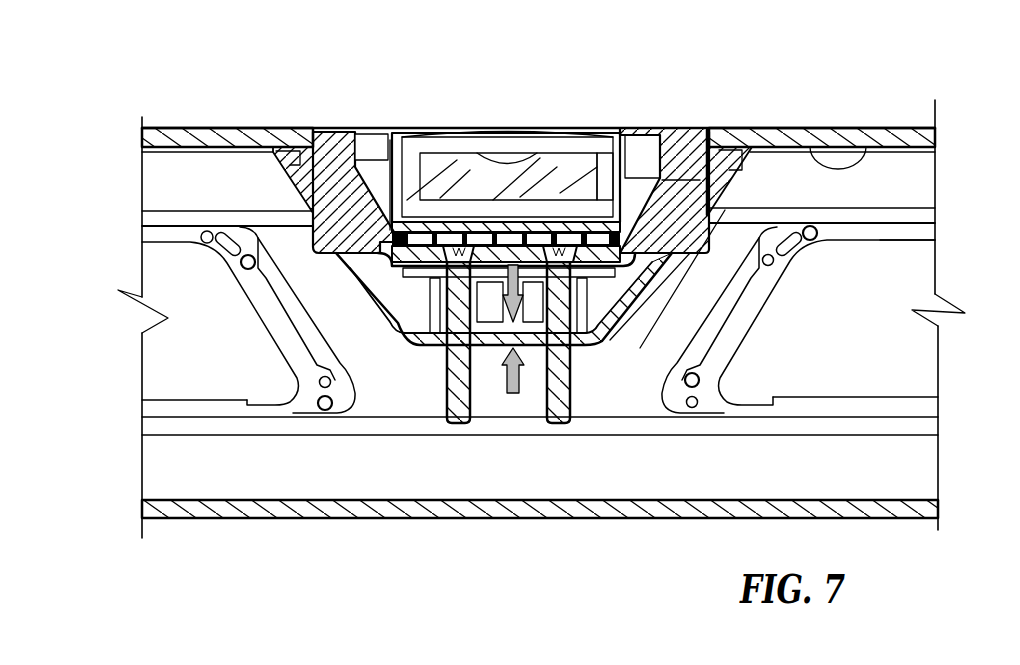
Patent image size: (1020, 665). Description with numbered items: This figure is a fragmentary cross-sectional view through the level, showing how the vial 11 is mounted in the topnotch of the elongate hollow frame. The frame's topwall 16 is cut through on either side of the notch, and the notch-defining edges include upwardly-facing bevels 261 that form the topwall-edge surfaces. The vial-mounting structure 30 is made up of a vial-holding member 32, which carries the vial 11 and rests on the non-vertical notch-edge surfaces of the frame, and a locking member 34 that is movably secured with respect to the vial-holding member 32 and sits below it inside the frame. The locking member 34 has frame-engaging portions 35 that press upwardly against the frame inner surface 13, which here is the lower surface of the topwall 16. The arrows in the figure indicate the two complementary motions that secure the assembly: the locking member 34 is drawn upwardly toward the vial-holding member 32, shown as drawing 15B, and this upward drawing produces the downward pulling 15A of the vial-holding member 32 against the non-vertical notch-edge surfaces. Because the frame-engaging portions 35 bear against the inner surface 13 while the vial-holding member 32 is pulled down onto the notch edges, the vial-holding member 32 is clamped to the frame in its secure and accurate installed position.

The topwall 16 is at (187, 127).
The frame inner surface 13 is at (878, 127).
The frame-engaging portions 35 is at (303, 130).
The vial-mounting structure 30 is at (327, 137).
The vial 11 is at (418, 147).
The vial-holding member 32 is at (670, 127).
The upwardly-facing bevels 261 is at (682, 143).
The locking member 34 is at (401, 317).
The downward pulling 15A is at (514, 286).
The drawing 15B is at (517, 392).